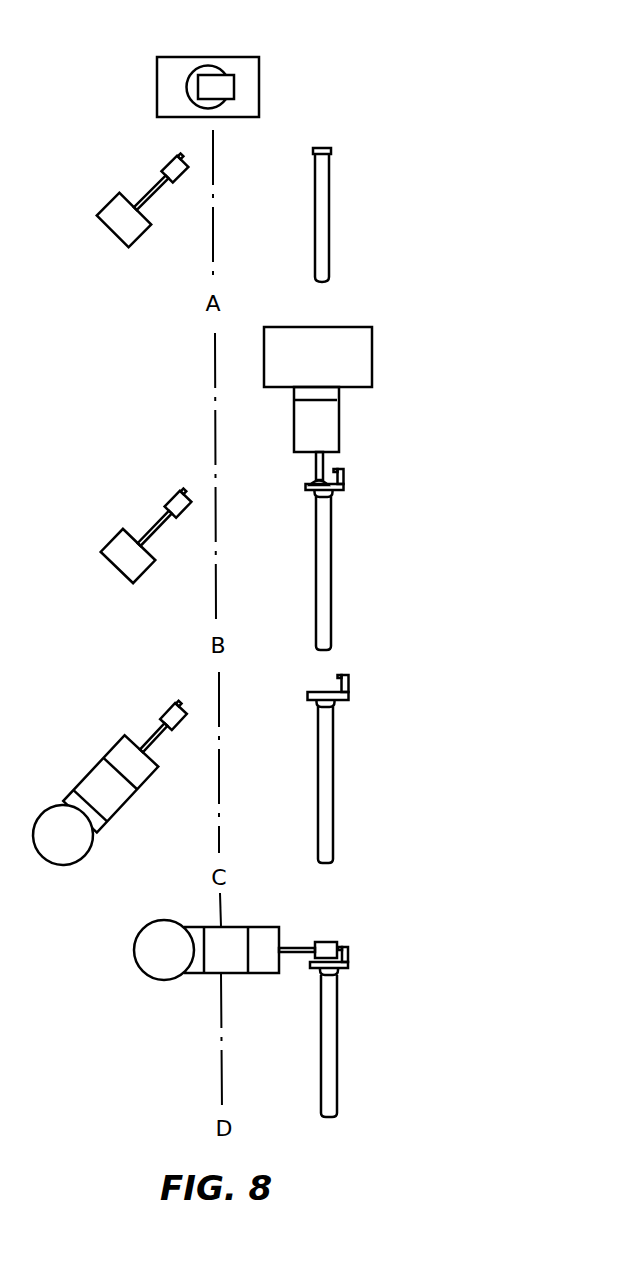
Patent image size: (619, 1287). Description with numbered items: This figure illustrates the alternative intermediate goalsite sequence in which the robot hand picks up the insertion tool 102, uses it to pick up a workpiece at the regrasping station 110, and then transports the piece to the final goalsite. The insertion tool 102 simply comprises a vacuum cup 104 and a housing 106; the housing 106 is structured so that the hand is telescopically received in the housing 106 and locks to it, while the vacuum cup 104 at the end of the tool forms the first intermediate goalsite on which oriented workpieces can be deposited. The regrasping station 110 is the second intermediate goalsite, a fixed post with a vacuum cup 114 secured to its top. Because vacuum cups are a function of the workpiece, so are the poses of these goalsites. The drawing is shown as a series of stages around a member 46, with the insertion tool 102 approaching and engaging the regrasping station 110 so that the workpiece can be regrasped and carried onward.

The receiving slot 46 is at (226, 78).
The insertion tool 102 is at (129, 194).
The vacuum cup 104 is at (172, 158).
The housing 106 is at (124, 220).
The regrasping station 110 is at (357, 191).
The vacuum cup 114 is at (323, 148).